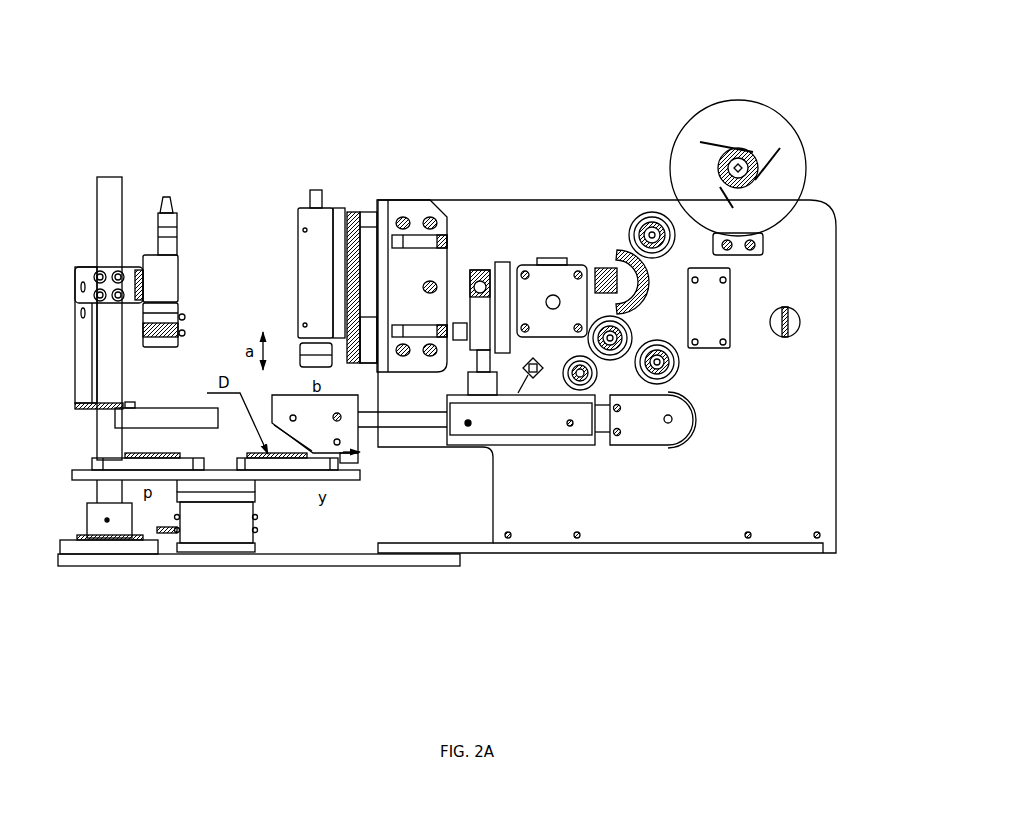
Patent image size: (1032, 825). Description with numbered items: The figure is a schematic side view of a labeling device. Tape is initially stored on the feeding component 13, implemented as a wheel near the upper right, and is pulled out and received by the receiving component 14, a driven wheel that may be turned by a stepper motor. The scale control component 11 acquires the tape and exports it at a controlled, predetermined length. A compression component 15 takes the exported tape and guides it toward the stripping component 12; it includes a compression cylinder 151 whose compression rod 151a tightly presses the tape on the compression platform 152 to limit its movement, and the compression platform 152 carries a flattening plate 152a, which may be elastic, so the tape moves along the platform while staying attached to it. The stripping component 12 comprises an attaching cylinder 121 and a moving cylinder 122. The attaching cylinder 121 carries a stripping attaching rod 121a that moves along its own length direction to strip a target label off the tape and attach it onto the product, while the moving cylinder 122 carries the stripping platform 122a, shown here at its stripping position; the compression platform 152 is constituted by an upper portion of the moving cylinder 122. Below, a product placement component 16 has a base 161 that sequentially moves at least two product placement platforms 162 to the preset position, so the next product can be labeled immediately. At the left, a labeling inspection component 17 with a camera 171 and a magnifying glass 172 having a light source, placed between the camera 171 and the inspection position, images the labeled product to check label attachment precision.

The scale control component 11 is at (616, 245).
The stripping component 12 is at (272, 187).
The attaching cylinder 121 is at (297, 269).
The stripping attaching rod 121a is at (298, 352).
The moving cylinder 122 is at (580, 426).
The stripping platform 122a is at (357, 448).
The feeding component 13 is at (729, 115).
The receiving component 14 is at (801, 319).
The compression component 15 is at (508, 155).
The compression cylinder 151 is at (491, 266).
The compression rod 151a is at (484, 386).
The compression platform 152 is at (513, 393).
The flattening plate 152a is at (537, 357).
The product placement component 16 is at (280, 658).
The base 161 is at (213, 524).
The product placement platform 162 is at (103, 466).
The labeling inspection component 17 is at (257, 138).
The camera 171 is at (166, 194).
The magnifying glass 172 is at (195, 406).